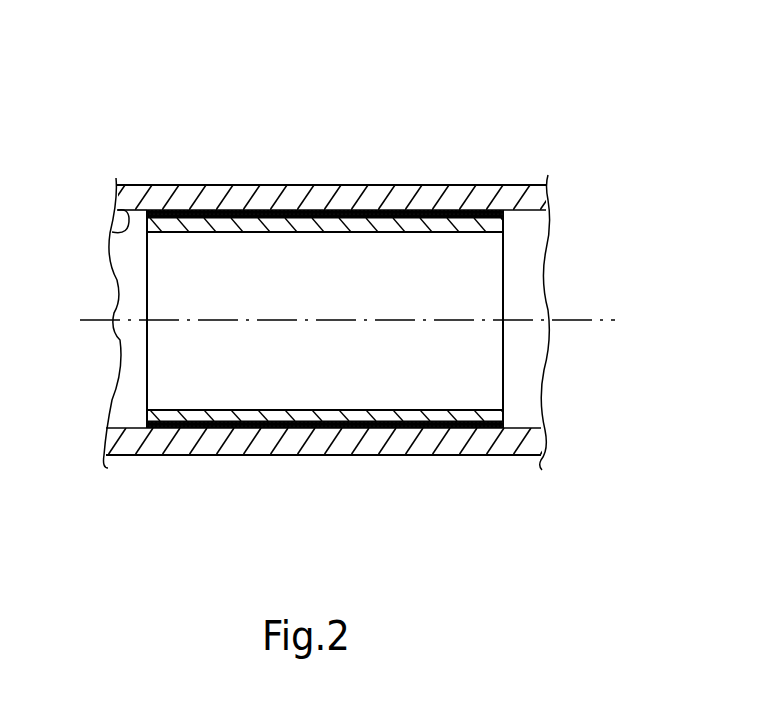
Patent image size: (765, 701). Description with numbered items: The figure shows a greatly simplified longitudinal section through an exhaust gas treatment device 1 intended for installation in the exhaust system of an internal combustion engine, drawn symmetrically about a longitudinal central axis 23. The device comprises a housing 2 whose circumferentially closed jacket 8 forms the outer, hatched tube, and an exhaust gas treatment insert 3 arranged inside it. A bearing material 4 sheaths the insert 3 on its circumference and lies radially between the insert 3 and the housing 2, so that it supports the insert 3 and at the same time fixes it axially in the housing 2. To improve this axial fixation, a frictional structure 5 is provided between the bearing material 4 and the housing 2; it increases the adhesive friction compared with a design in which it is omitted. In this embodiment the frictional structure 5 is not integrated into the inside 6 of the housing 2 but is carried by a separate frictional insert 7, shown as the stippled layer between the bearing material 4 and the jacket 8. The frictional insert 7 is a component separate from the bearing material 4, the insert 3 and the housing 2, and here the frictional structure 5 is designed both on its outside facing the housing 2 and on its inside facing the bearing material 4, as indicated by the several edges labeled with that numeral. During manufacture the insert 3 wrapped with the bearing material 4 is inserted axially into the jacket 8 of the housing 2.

The exhaust gas treatment device 1 is at (350, 271).
The housing 2 is at (500, 181).
The exhaust gas treatment insert 3 is at (188, 388).
The bearing material 4 is at (353, 232).
The frictional structure 5 is at (310, 186).
The inside of the housing 6 is at (112, 232).
The frictional insert 7 is at (378, 203).
The jacket 8 is at (207, 187).
The longitudinal central axis 23 is at (513, 320).